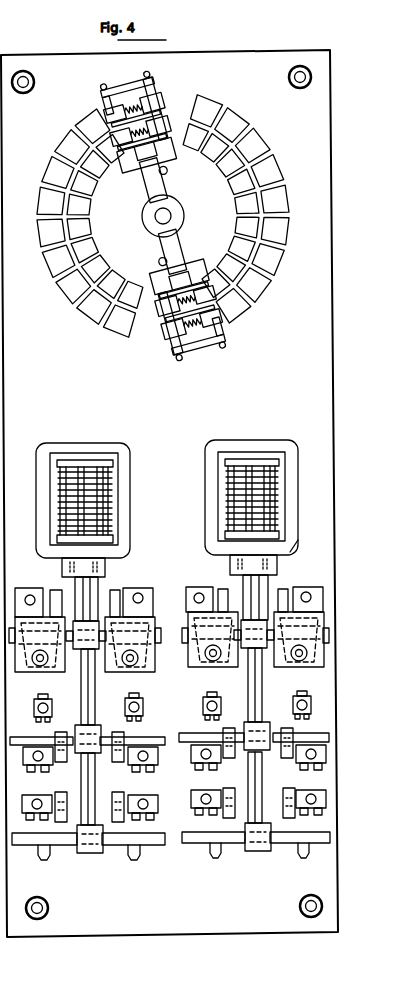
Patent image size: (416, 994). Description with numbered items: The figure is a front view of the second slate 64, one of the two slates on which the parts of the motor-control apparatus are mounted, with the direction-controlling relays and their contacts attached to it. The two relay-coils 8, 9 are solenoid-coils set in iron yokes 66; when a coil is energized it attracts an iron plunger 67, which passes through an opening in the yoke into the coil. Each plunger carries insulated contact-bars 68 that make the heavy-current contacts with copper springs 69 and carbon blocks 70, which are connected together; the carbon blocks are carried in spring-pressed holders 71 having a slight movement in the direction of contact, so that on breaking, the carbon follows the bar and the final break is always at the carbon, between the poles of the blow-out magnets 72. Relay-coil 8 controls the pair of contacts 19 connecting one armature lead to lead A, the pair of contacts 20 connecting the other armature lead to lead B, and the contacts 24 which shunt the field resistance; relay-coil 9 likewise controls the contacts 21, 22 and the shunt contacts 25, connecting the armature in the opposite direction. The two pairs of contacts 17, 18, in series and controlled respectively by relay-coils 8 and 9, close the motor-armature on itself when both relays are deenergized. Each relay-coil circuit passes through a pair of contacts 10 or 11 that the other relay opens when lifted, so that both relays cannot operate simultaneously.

The slate 64 is at (13, 55).
The relay-coil 8 is at (105, 512).
The relay-coil 9 is at (230, 491).
The iron yoke 66 is at (299, 549).
The pair of contacts 19 is at (118, 562).
The pair of contacts 21 is at (222, 588).
The iron plunger 67 is at (270, 592).
The blow-out magnet 72 is at (32, 668).
The contacts 24 is at (34, 712).
The contacts 25 is at (203, 710).
The insulated contact-bar 68 is at (330, 736).
The copper spring 69 is at (286, 728).
The carbon block 70 is at (326, 750).
The spring-pressed holder 71 is at (326, 765).
The pair of contacts 17 is at (62, 762).
The pair of contacts 18 is at (258, 754).
The pair of contacts 20 is at (60, 796).
The pair of contacts 22 is at (228, 792).
The pair of contacts 11 is at (45, 860).
The pair of contacts 10 is at (214, 858).